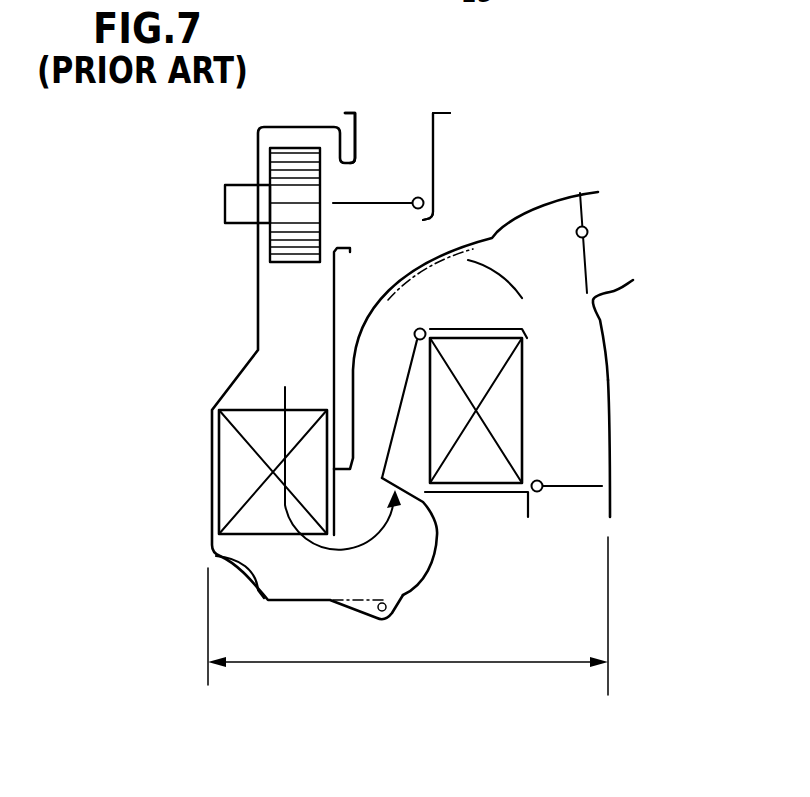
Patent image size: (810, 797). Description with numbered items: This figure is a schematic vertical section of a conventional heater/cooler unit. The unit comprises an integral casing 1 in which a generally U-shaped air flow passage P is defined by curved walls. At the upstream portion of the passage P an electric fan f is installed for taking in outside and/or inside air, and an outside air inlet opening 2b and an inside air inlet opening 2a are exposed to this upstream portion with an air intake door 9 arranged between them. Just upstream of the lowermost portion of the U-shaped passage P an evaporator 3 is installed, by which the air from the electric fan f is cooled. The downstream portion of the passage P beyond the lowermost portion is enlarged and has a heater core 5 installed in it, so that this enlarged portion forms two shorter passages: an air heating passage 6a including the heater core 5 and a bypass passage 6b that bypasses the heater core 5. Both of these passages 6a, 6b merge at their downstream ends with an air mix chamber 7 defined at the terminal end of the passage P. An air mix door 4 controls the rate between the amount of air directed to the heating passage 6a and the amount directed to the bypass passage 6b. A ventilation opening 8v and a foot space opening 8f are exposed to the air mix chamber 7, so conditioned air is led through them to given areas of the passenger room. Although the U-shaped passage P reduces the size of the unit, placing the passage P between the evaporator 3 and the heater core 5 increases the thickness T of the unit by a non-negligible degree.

The integral casing 1 is at (253, 337).
The inside air inlet opening 2a is at (383, 232).
The outside air inlet opening 2b is at (393, 125).
The evaporator 3 is at (230, 478).
The air mix door 4 is at (430, 505).
The heater core 5 is at (507, 408).
The air heating passage 6a is at (480, 483).
The bypass passage 6b is at (380, 355).
The air mix chamber 7 is at (547, 318).
The ventilation opening 8v is at (602, 252).
The foot space opening 8f is at (577, 513).
The air intake door 9 is at (378, 200).
The electric fan f is at (295, 165).
The air flow passage P is at (208, 552).
The thickness T is at (408, 616).